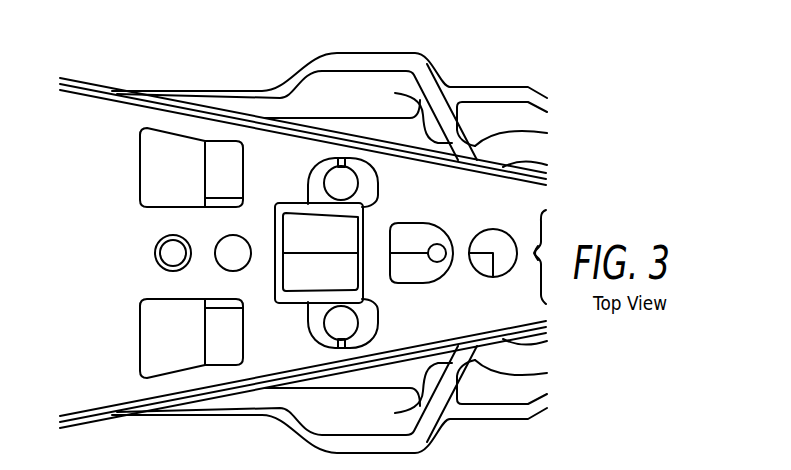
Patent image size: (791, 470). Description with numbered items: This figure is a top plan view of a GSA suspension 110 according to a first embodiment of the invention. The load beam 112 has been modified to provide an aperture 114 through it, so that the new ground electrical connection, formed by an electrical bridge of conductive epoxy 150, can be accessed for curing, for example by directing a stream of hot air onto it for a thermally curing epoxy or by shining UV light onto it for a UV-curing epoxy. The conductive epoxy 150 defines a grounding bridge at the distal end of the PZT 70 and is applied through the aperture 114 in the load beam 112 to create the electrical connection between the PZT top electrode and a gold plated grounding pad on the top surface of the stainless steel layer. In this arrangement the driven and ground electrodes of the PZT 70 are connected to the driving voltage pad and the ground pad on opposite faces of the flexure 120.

The PZT 70 is at (223, 171).
The GSA suspension 110 is at (214, 70).
The load beam 112 is at (108, 124).
The aperture 114 is at (376, 176).
The flexure 120 is at (318, 38).
The conductive epoxy 150 is at (345, 178).